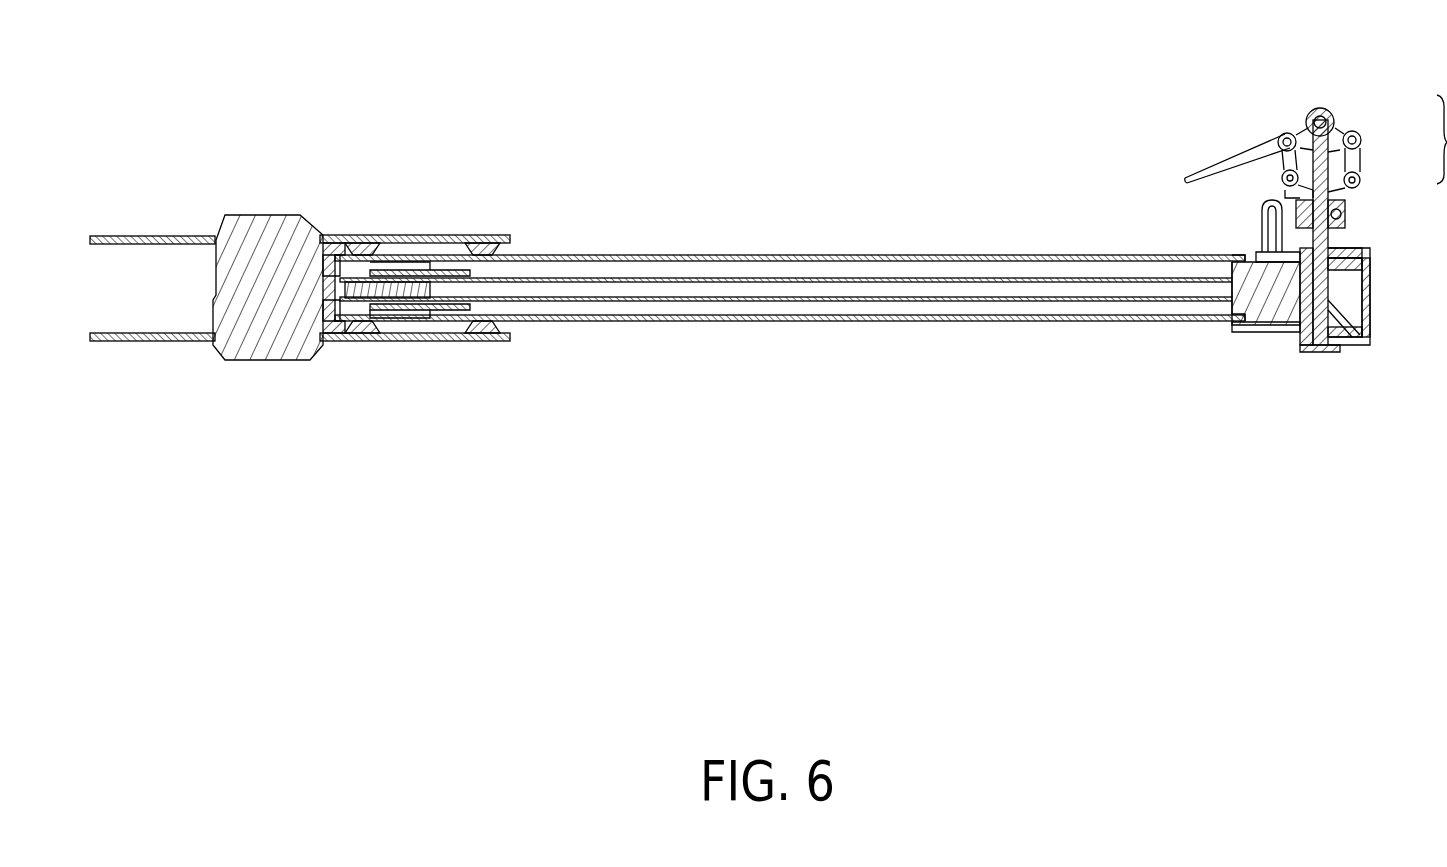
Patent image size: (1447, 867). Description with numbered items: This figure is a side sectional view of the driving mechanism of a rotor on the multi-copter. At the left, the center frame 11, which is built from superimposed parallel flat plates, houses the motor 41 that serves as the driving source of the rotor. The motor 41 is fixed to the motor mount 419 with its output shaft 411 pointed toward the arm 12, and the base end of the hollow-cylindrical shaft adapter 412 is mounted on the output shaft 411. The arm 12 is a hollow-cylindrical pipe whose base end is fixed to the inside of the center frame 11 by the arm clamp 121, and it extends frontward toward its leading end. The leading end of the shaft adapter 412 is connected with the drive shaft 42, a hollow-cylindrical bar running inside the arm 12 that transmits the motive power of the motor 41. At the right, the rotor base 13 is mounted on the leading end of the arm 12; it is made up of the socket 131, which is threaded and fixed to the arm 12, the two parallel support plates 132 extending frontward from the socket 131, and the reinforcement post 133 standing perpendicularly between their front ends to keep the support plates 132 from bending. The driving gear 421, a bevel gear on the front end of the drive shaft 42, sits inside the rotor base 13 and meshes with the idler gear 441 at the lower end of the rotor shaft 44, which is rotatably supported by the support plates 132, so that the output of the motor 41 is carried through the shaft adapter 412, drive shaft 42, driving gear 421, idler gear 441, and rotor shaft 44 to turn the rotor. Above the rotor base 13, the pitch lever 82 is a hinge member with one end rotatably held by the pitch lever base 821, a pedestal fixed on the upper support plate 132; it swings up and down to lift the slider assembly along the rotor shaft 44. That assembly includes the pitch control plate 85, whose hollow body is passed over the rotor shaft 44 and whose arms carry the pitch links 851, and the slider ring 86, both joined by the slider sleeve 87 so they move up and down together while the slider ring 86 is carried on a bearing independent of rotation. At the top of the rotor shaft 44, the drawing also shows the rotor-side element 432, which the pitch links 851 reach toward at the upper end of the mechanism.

The center frame 11 is at (148, 236).
The motor 41 is at (240, 215).
The output shaft 411 is at (362, 237).
The shaft adapter 412 is at (430, 237).
The motor mount 419 is at (347, 342).
The arm 12 is at (620, 256).
The drive shaft 42 is at (745, 280).
The arm clamp 121 is at (470, 342).
The lever arm 432 is at (1252, 140).
The pitch link 851 is at (1334, 118).
The pitch control plate 85 is at (1361, 180).
The slider sleeve 87 is at (1346, 212).
The slider ring 86 is at (1353, 214).
The pitch lever 82 is at (1290, 200).
The pitch lever base 821 is at (1262, 238).
The socket 131 is at (1168, 333).
The driving gear 421 is at (1280, 342).
The idler gear 441 is at (1308, 345).
The rotor shaft 44 is at (1358, 246).
The rotor base 13 is at (1372, 345).
The support plate 132 is at (1362, 262).
The reinforcement post 133 is at (1366, 290).